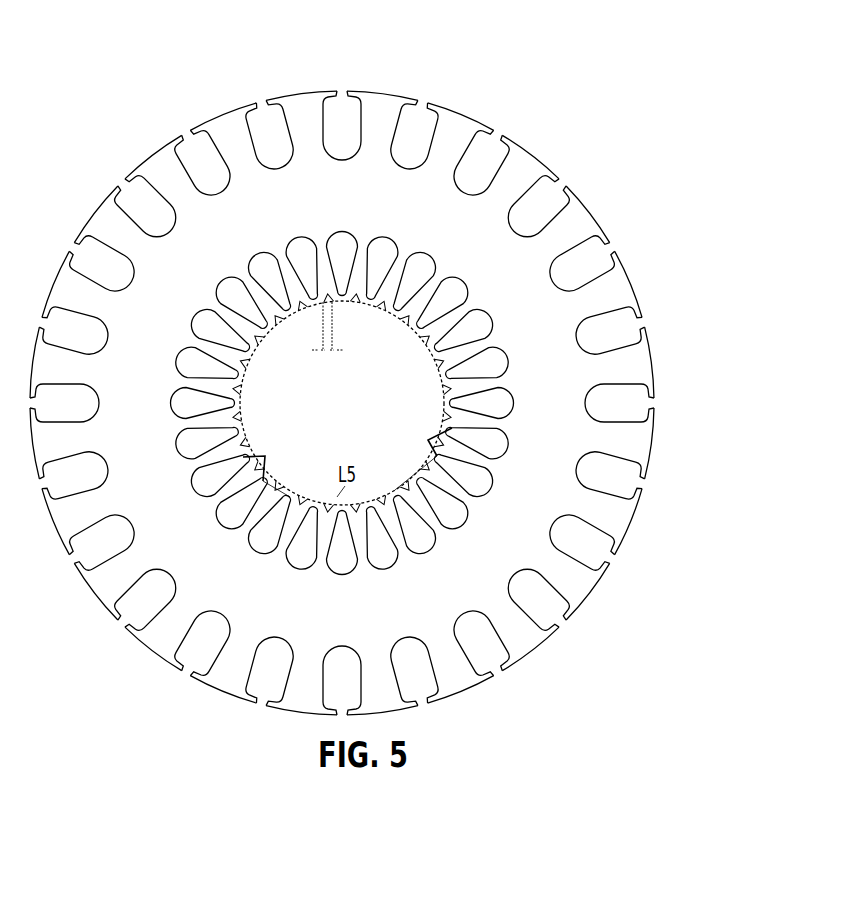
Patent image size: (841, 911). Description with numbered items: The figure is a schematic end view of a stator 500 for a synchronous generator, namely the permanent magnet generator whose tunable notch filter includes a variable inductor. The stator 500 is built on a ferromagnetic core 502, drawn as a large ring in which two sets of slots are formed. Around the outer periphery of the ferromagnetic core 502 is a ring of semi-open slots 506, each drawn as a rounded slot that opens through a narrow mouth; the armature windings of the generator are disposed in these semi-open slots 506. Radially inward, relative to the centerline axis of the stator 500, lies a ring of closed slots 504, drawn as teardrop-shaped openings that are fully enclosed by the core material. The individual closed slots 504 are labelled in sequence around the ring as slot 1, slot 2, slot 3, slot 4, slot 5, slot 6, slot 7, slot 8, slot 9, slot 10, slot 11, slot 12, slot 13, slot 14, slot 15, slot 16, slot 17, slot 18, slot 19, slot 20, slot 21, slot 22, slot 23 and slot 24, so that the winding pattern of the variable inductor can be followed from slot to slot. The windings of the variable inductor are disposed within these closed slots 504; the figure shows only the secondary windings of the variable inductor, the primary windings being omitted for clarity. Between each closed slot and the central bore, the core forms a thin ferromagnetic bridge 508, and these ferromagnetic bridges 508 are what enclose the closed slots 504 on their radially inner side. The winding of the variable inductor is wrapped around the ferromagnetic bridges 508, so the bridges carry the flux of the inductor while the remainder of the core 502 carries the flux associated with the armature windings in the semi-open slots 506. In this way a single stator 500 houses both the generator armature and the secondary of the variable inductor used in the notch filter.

The stator 500 is at (626, 68).
The ferromagnetic core 502 is at (458, 232).
The plurality of closed slots 504 is at (458, 288).
The plurality of semi-open slots 506 is at (580, 265).
The plurality of ferromagnetic bridges 508 is at (443, 375).
The rotor slot 1 is at (342, 263).
The rotor slot 2 is at (378, 268).
The rotor slot 3 is at (411, 282).
The rotor slot 4 is at (440, 304).
The rotor slot 5 is at (462, 333).
The rotor slot 6 is at (477, 367).
The rotor slot 7 is at (482, 403).
The rotor slot 8 is at (477, 439).
The rotor slot 9 is at (462, 472).
The rotor slot 10 is at (440, 501).
The rotor slot 11 is at (411, 523).
The rotor slot 12 is at (378, 538).
The rotor slot 13 is at (342, 543).
The rotor slot 14 is at (306, 538).
The rotor slot 15 is at (272, 523).
The rotor slot 16 is at (243, 501).
The rotor slot 17 is at (221, 472).
The rotor slot 18 is at (207, 439).
The rotor slot 19 is at (202, 403).
The rotor slot 20 is at (207, 367).
The rotor slot 21 is at (221, 333).
The rotor slot 22 is at (243, 304).
The rotor slot 23 is at (272, 282).
The rotor slot 24 is at (306, 268).